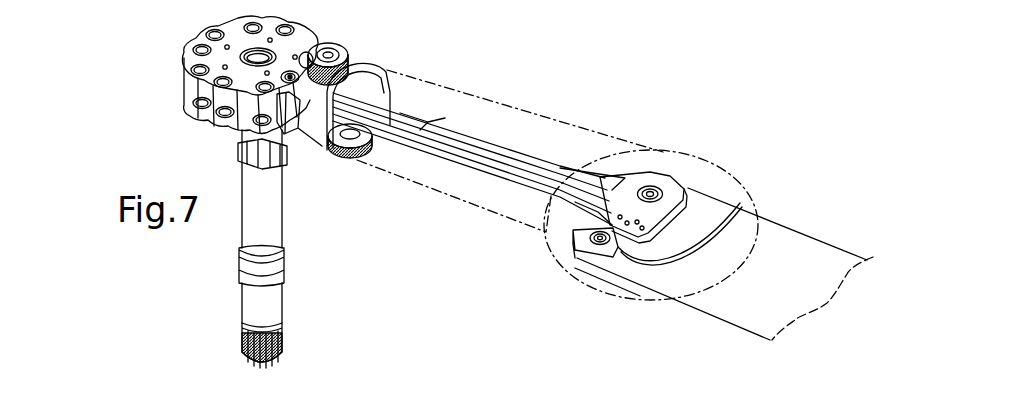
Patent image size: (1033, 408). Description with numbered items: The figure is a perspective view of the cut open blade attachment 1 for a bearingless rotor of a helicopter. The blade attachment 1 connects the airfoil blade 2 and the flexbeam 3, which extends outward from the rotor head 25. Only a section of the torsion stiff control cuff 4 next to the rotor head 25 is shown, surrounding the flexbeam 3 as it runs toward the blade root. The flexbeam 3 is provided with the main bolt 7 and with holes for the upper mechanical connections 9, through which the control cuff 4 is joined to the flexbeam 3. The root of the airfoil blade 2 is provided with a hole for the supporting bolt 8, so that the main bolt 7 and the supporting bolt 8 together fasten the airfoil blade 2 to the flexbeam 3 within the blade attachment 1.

The blade attachment 1 is at (667, 152).
The airfoil blade 2 is at (786, 247).
The flexbeam 3 is at (388, 118).
The torsion stiff control cuff 4 is at (447, 94).
The main bolt 7 is at (650, 182).
The supporting bolt 8 is at (580, 253).
The upper mechanical connections 9 is at (590, 212).
The rotor head 25 is at (216, 63).